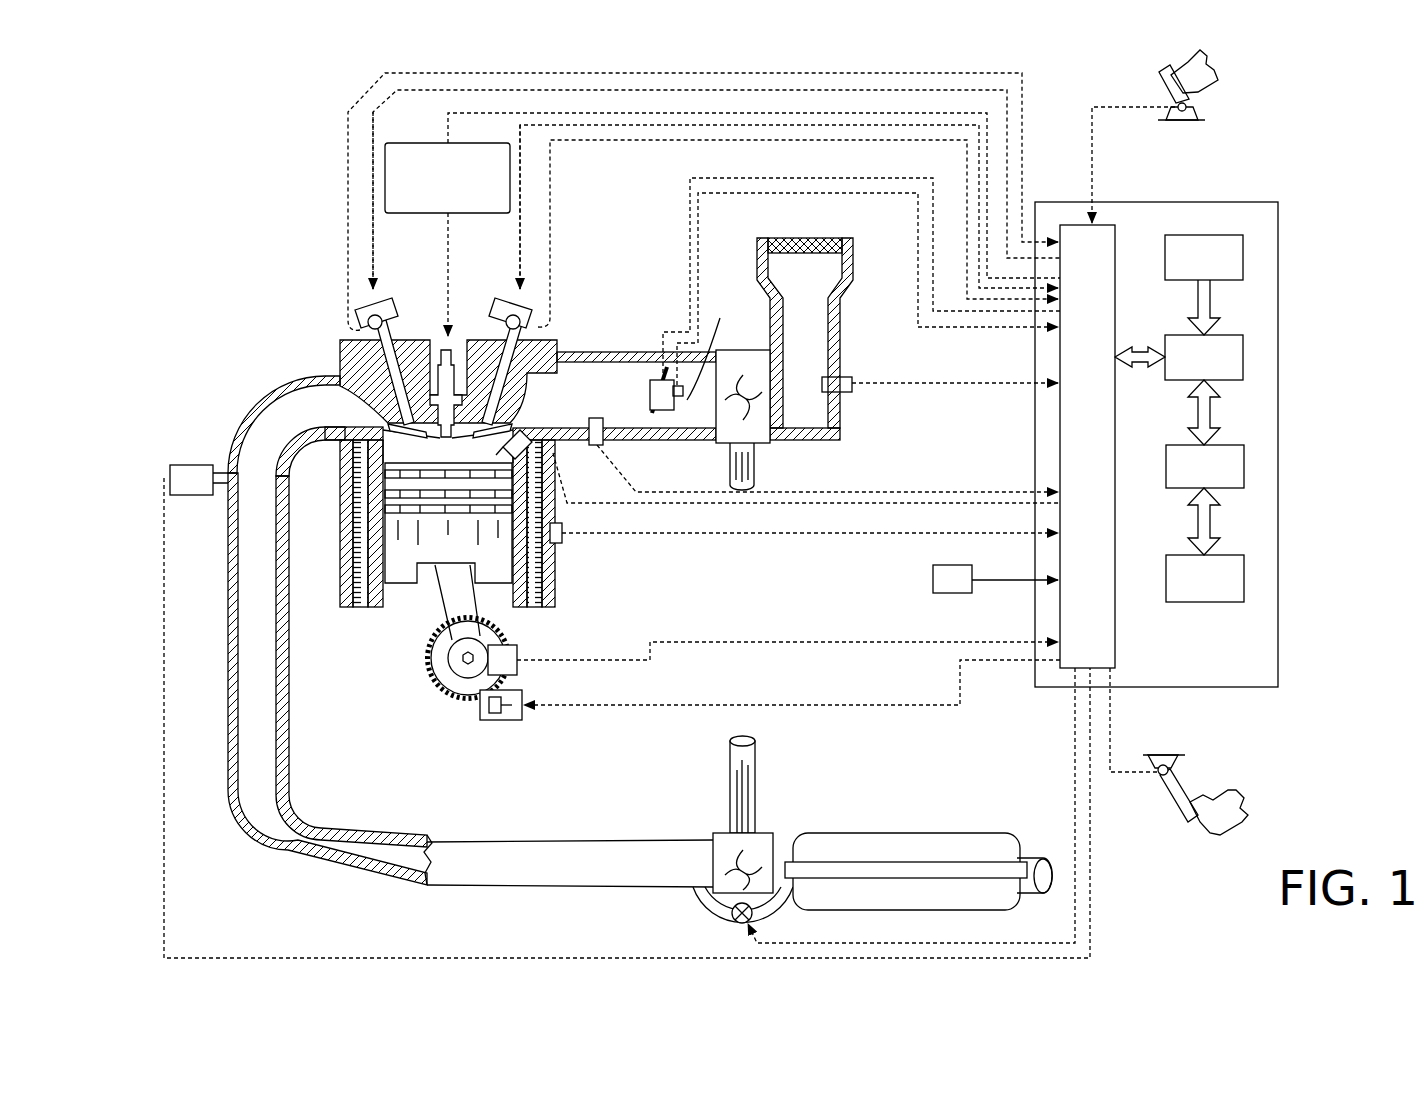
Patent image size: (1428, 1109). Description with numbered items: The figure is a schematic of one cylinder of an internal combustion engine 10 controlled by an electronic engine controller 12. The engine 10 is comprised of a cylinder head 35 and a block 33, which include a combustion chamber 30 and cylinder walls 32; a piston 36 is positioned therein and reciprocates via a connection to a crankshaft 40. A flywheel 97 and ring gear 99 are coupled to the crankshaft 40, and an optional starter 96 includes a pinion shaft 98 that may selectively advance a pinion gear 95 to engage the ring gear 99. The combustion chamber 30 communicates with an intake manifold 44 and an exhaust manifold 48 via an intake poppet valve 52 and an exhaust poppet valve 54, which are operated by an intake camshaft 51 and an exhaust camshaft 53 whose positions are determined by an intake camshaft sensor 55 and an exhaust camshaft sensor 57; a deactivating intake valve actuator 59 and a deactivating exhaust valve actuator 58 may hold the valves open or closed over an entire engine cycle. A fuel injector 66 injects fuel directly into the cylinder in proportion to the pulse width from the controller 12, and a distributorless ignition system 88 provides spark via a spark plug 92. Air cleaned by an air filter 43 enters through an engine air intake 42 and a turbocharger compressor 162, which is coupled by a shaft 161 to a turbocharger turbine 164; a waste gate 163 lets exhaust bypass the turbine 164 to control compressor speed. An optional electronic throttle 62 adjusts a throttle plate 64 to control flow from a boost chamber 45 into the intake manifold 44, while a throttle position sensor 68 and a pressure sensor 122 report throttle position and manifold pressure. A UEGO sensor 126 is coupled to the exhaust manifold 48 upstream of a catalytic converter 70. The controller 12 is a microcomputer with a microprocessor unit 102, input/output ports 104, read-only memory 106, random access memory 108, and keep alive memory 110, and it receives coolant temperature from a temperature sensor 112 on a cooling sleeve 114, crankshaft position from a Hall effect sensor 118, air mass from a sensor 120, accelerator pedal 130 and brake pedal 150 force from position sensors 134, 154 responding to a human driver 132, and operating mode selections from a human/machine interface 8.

The human/machine interface 8 is at (995, 579).
The internal combustion engine 10 is at (270, 291).
The electronic engine controller 12 is at (1280, 205).
The combustion chamber 30 is at (383, 530).
The cylinder walls 32 is at (388, 612).
The block 33 is at (503, 550).
The cylinder head 35 is at (338, 343).
The piston 36 is at (430, 600).
The crankshaft 40 is at (443, 654).
The engine air intake 42 is at (832, 318).
The air filter 43 is at (825, 255).
The intake manifold 44 is at (698, 396).
The boost chamber 45 is at (697, 399).
The exhaust manifold 48 is at (470, 631).
The intake camshaft 51 is at (516, 302).
The intake poppet valve 52 is at (497, 418).
The exhaust camshaft 53 is at (375, 302).
The exhaust poppet valve 54 is at (360, 388).
The intake camshaft sensor 55 is at (511, 297).
The exhaust camshaft sensor 57 is at (372, 299).
The deactivating exhaust valve actuator 58 is at (395, 318).
The deactivating intake valve actuator 59 is at (506, 330).
The electronic throttle 62 is at (650, 393).
The throttle plate 64 is at (655, 410).
The fuel injector 66 is at (497, 451).
The throttle position sensor 68 is at (706, 347).
The catalytic converter 70 is at (840, 833).
The distributorless ignition system 88 is at (400, 143).
The spark plug 92 is at (450, 335).
The pinion gear 95 is at (498, 720).
The starter 96 is at (497, 730).
The flywheel 97 is at (437, 665).
The pinion shaft 98 is at (483, 715).
The ring gear 99 is at (457, 707).
The microprocessor unit 102 is at (1243, 362).
The input/output ports 104 is at (1115, 235).
The read-only memory 106 is at (1243, 262).
The random access memory 108 is at (1244, 470).
The keep alive memory 110 is at (1244, 580).
The temperature sensor 112 is at (562, 530).
The cooling sleeve 114 is at (545, 565).
The Hall effect sensor 118 is at (518, 652).
The air mass sensor 120 is at (848, 378).
The pressure sensor 122 is at (597, 445).
The Universal Exhaust Gas Oxygen sensor 126 is at (176, 465).
The accelerator pedal 130 is at (1221, 90).
The human driver 132 is at (1212, 62).
The position sensor 134 is at (1200, 108).
The brake pedal 150 is at (1183, 791).
The position sensor 154 is at (1158, 770).
The shaft 161 is at (755, 465).
The turbocharger compressor 162 is at (818, 446).
The waste gate 163 is at (732, 918).
The turbocharger turbine 164 is at (715, 833).